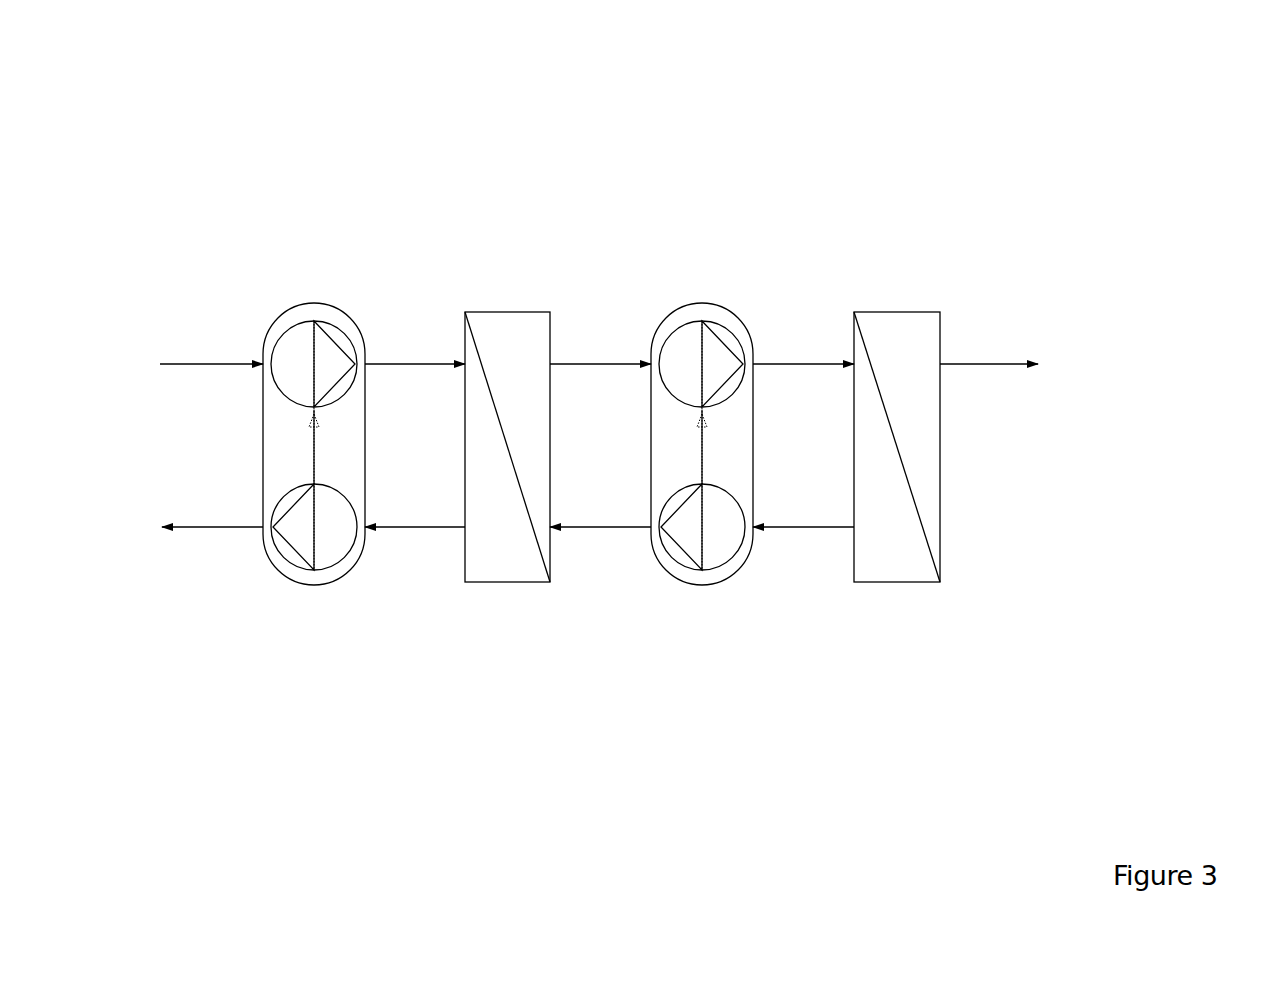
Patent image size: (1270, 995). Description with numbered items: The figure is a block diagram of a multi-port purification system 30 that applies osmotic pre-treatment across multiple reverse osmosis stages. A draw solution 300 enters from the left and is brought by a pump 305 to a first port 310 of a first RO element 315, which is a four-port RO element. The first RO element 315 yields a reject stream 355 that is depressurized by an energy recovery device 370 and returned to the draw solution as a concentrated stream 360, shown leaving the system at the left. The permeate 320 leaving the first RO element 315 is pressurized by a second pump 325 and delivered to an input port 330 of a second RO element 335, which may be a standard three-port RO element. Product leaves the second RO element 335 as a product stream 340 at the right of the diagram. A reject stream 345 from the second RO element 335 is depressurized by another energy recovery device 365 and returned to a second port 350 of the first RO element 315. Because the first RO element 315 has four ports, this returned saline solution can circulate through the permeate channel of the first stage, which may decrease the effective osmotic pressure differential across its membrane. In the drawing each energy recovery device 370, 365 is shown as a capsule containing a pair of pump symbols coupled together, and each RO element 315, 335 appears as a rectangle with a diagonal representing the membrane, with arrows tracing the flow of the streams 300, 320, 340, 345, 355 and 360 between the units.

The multi-port purification system 30 is at (1136, 60).
The draw solution 300 is at (201, 373).
The pump 305 is at (314, 340).
The first port 310 is at (415, 351).
The first RO element 315 is at (507, 450).
The permeate 320 is at (600, 342).
The pump 325 is at (702, 340).
The input port 330 is at (803, 349).
The second RO element 335 is at (897, 455).
The stream 340 is at (1031, 372).
The reject stream 345 is at (803, 509).
The second port 350 is at (600, 509).
The reject stream 355 is at (415, 509).
The concentrated stream 360 is at (201, 533).
The energy recovery device 365 is at (702, 467).
The energy recovery device 370 is at (314, 467).